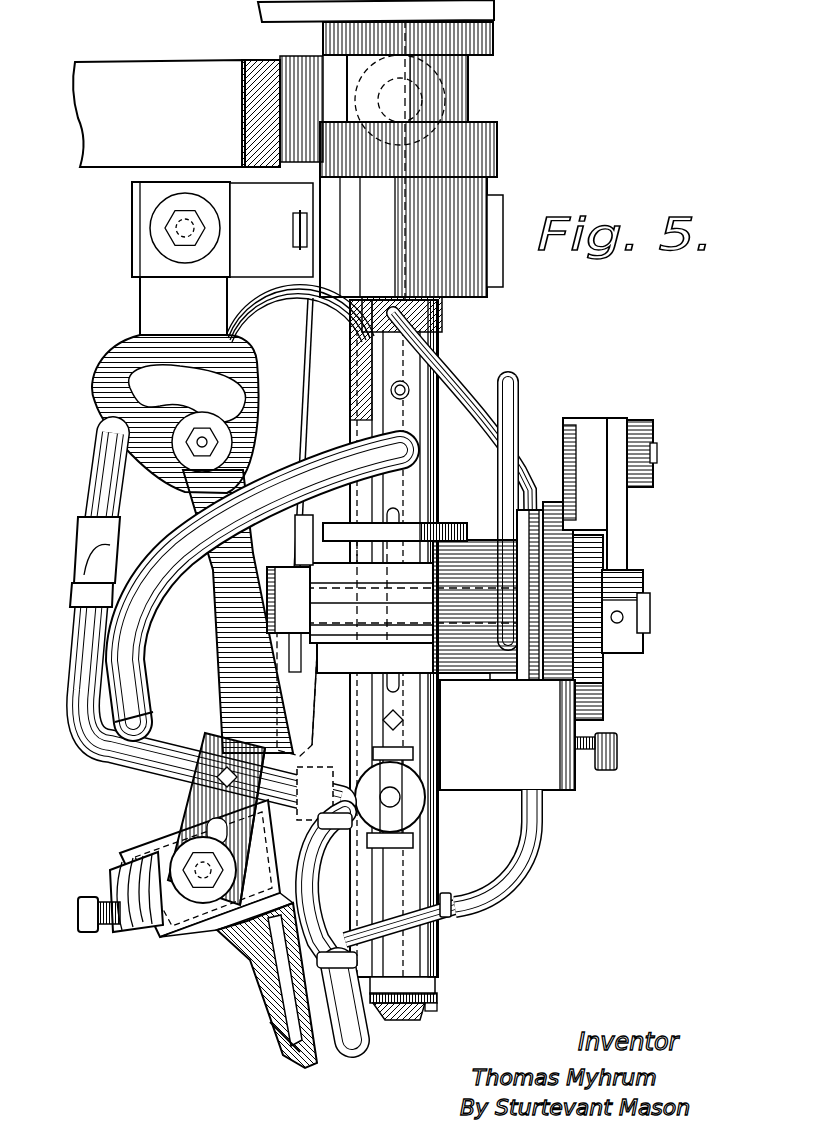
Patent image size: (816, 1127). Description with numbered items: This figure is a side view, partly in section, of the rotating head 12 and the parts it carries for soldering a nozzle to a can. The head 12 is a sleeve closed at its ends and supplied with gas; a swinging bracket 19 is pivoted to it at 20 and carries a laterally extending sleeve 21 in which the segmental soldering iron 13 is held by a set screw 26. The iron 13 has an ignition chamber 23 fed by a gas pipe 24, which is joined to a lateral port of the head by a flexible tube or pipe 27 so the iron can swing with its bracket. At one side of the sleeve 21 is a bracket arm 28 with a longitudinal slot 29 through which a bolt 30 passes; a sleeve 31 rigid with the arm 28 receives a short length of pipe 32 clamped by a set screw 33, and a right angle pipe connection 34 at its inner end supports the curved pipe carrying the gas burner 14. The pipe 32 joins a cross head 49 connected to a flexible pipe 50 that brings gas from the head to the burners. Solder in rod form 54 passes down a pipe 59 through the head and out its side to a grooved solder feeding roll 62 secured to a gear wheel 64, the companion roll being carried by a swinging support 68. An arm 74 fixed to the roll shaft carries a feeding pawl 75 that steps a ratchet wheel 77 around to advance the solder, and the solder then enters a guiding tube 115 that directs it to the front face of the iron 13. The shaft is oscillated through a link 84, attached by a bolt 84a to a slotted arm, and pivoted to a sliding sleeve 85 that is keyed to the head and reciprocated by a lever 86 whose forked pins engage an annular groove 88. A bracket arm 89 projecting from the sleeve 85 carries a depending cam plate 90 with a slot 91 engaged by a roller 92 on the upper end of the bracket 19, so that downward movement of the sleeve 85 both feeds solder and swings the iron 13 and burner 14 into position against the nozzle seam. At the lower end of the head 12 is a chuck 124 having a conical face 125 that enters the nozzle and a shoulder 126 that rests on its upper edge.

The rotating head 12 is at (443, 323).
The soldering iron 13 is at (262, 1000).
The gas burner 14 is at (350, 1035).
The swinging bracket 19 is at (290, 730).
The pivot 20 is at (393, 797).
The laterally extending sleeve 21 is at (137, 855).
The ignition chamber 23 is at (250, 935).
The gas pipe 24 is at (160, 777).
The set screw 26 is at (80, 917).
The flexible tube or pipe 27 is at (330, 452).
The bracket arm 28 is at (175, 815).
The longitudinal slot 29 is at (205, 833).
The bolt 30 is at (180, 897).
The sleeve 31 is at (215, 735).
The short length of pipe 32 is at (130, 738).
The set screw 33 is at (227, 777).
The right angle pipe connection 34 is at (417, 823).
The cross head 49 is at (80, 537).
The flexible pipe 50 is at (297, 330).
The solder rod 54 is at (273, 1020).
The pipe 59 is at (450, 385).
The solder feeding roll 62 is at (307, 513).
The gear wheel 64 is at (607, 540).
The swinging support 68 is at (520, 408).
The arm 74 is at (620, 547).
The feeding pawl 75 is at (590, 428).
The ratchet wheel 77 is at (580, 683).
The link 84 is at (307, 383).
The bolt 84a is at (260, 548).
The sliding sleeve 85 is at (460, 203).
The lever 86 is at (198, 111).
The annular groove 88 is at (473, 105).
The bracket arm 89 is at (130, 226).
The cam plate 90 is at (160, 300).
The cam slot 91 is at (97, 378).
The roller 92 is at (187, 418).
The guiding tube 115 is at (540, 857).
The chuck 124 is at (437, 993).
The conical face 125 is at (420, 1017).
The shoulder 126 is at (430, 1008).